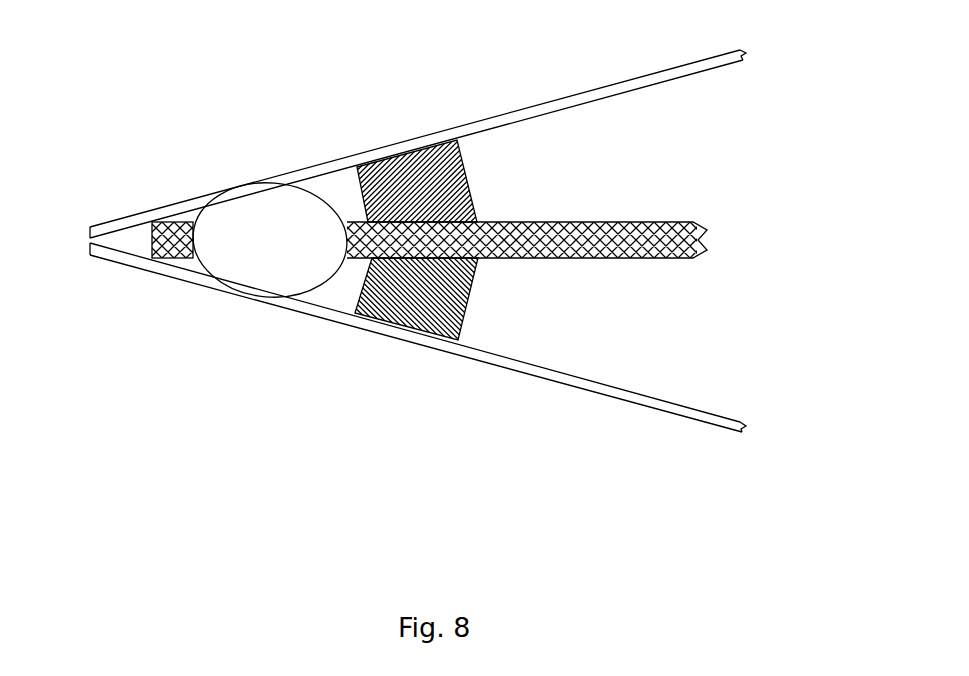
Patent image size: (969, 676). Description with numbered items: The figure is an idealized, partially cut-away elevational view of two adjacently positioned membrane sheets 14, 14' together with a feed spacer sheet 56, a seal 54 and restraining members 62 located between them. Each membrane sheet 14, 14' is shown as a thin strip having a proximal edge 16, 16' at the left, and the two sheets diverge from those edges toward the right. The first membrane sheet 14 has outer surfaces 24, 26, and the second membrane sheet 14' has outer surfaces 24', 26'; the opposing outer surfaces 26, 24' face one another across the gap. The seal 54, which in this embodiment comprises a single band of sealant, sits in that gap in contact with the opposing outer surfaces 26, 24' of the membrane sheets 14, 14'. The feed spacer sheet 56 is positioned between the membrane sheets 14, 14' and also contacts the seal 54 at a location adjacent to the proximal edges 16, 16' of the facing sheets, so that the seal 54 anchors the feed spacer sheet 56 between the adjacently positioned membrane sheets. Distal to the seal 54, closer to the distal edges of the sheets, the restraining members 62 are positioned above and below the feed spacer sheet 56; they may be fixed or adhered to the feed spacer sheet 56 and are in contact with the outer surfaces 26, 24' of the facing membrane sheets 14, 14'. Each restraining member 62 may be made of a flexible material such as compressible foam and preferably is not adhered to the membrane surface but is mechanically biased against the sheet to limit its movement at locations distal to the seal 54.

The membrane sheet 14 is at (419, 130).
The membrane sheet 14' is at (421, 345).
The proximal edge 16 is at (61, 220).
The proximal edge 16' is at (61, 257).
The outer surface 24 is at (415, 131).
The outer surface 24' is at (415, 332).
The outer surface 26 is at (416, 149).
The outer surface 26' is at (416, 351).
The seal 54 is at (267, 213).
The feed spacer sheet 56 is at (660, 222).
The restraining member 62 is at (467, 172).